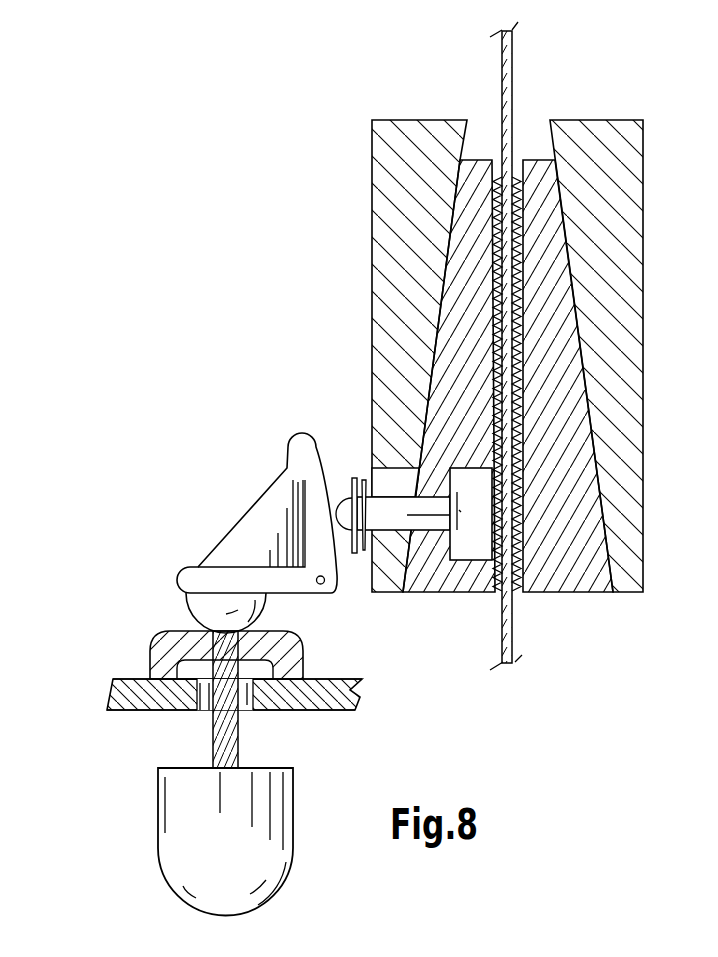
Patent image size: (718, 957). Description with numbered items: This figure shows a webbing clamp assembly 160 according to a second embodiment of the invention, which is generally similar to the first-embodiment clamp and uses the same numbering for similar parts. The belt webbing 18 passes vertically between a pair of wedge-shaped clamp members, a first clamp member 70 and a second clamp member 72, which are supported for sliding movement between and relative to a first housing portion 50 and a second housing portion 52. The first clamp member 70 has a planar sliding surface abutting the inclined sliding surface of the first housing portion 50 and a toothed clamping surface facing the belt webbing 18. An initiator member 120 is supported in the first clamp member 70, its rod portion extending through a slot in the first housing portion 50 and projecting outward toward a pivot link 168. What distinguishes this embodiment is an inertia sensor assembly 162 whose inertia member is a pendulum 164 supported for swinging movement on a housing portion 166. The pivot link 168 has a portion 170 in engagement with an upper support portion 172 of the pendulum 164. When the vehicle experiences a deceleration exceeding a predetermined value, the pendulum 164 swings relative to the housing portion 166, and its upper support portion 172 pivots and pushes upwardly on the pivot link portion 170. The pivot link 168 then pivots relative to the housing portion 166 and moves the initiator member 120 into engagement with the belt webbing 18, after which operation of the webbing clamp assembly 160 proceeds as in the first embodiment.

The belt webbing 18 is at (507, 60).
The first housing portion 50 is at (387, 165).
The second housing portion 52 is at (633, 147).
The first clamp member 70 is at (472, 295).
The second clamp member 72 is at (550, 277).
The initiator member 120 is at (393, 520).
The webbing clamp assembly 160 is at (226, 468).
The inertia sensor assembly 162 is at (192, 770).
The pendulum 164 is at (158, 840).
The housing portion 166 is at (110, 693).
The pivot link 168 is at (165, 548).
The pivot link portion 170 is at (197, 612).
The upper support portion 172 is at (157, 647).